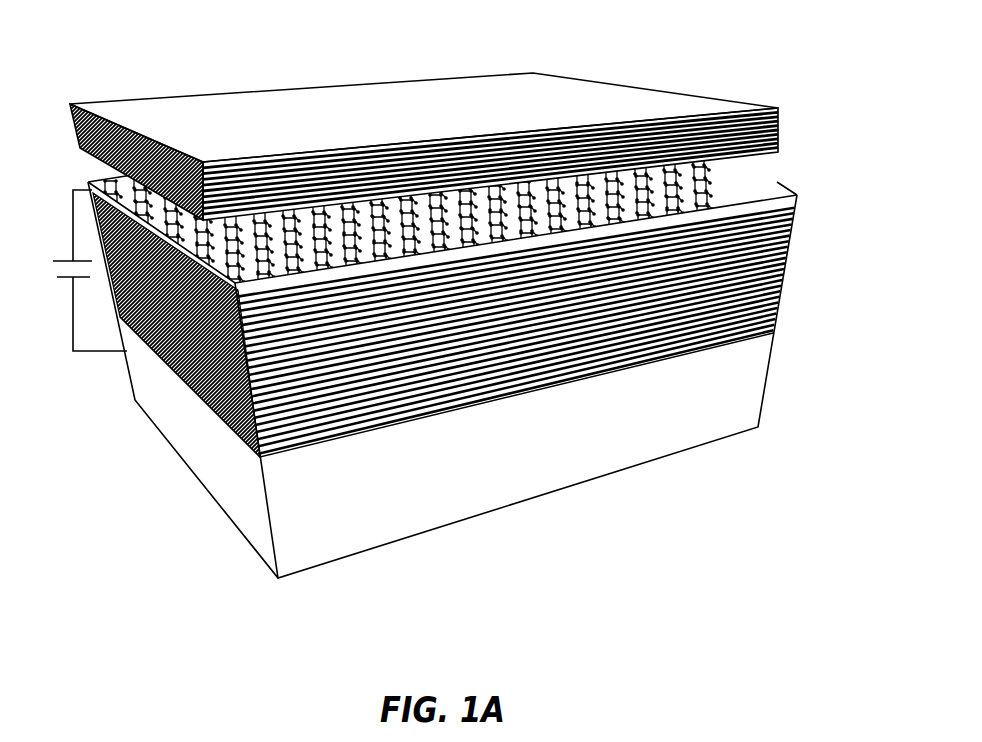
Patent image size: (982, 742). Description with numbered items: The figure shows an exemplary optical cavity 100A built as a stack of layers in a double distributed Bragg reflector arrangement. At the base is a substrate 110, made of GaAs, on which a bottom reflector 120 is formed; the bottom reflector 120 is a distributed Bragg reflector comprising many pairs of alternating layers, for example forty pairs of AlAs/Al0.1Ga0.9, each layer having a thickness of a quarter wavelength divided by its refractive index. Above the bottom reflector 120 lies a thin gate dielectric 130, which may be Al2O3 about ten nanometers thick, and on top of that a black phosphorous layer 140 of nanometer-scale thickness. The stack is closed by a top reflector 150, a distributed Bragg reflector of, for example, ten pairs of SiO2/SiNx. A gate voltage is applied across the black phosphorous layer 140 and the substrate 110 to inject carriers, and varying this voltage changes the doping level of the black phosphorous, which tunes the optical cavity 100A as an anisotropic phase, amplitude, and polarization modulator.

The optical cavity 100A is at (593, 593).
The substrate 110 is at (685, 400).
The bottom reflector 120 is at (480, 333).
The gate dielectric 130 is at (797, 195).
The black phosphorous layer 140 is at (175, 373).
The top reflector 150 is at (398, 143).